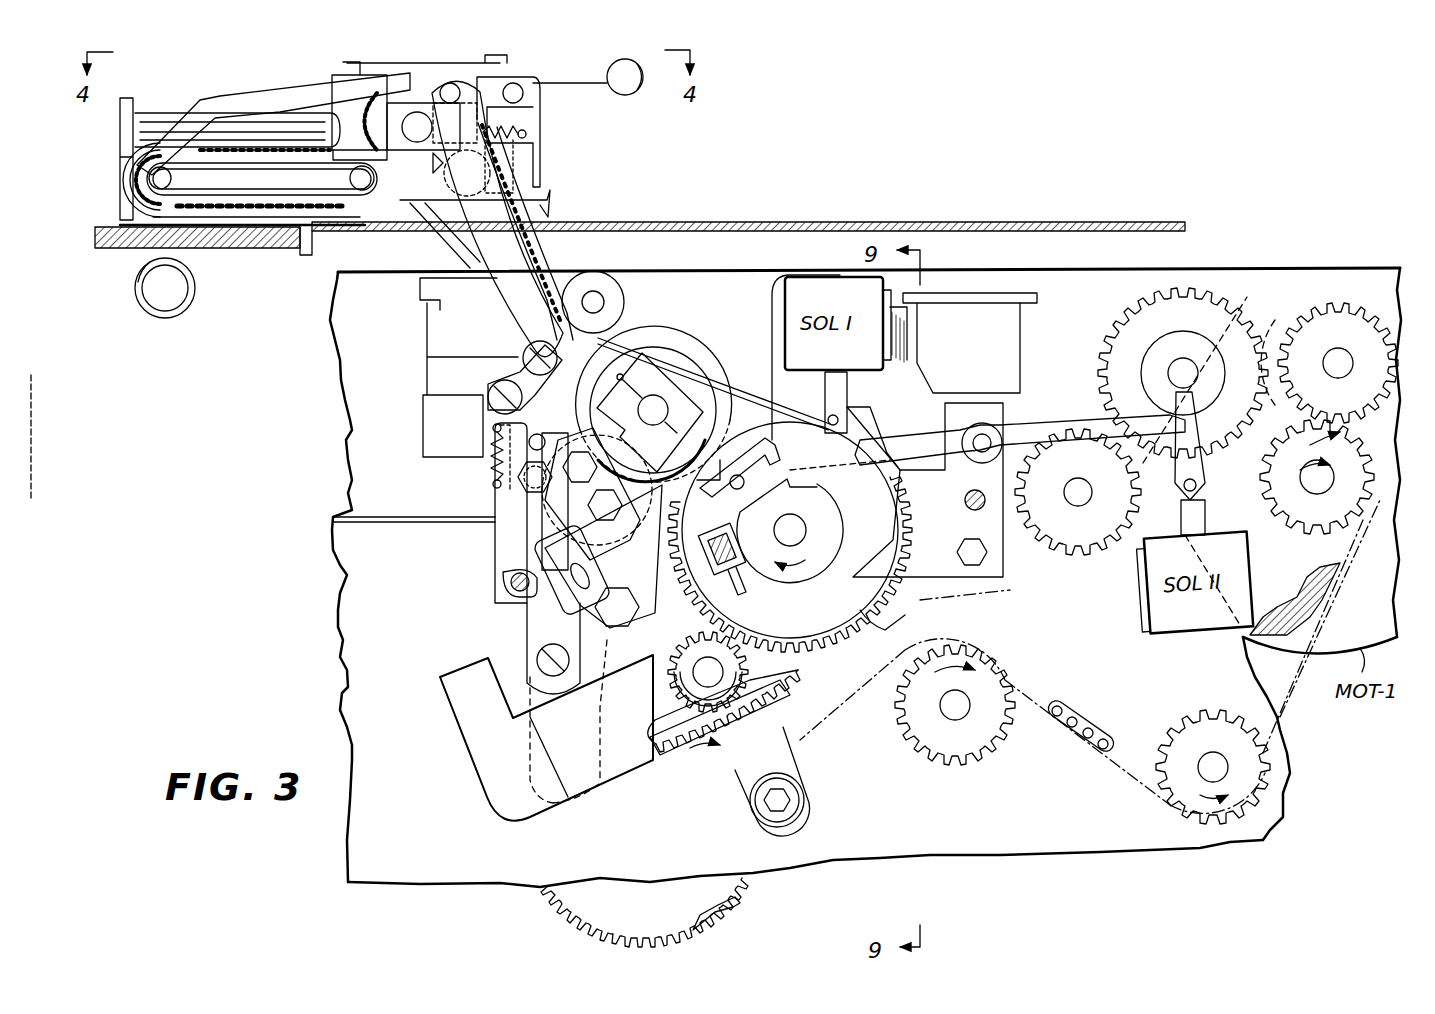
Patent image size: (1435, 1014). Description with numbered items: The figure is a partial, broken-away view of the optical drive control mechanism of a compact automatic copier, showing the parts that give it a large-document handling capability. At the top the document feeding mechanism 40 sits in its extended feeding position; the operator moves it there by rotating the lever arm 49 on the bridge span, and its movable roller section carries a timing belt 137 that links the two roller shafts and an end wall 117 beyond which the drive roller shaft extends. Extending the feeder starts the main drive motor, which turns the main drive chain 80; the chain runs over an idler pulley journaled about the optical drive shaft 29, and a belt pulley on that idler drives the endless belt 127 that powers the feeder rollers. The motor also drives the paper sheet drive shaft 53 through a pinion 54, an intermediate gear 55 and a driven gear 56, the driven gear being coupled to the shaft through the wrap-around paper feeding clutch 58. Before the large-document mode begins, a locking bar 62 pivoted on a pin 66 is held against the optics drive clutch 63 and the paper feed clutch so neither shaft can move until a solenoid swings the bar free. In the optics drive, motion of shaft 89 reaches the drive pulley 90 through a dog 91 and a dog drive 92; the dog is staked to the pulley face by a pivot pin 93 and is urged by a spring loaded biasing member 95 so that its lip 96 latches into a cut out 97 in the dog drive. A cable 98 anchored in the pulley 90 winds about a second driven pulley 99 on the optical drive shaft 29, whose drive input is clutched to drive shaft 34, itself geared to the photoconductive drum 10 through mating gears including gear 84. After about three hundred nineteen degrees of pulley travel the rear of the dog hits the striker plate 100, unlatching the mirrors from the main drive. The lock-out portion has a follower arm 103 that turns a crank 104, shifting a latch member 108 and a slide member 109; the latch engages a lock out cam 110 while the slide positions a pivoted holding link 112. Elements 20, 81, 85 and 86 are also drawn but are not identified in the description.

The photoconductive drum 10 is at (717, 280).
The platen roller 20 is at (135, 252).
The optical drive shaft 29 is at (668, 390).
The drive shaft 34 is at (690, 676).
The document feeding mechanism 40 is at (518, 70).
The lever arm 49 is at (636, 88).
The paper sheet drive shaft 53 is at (1185, 370).
The pinion 54 is at (1312, 545).
The intermediate gear 55 is at (1352, 290).
The driven gear 56 is at (1232, 315).
The paper feeding clutch 58 is at (1140, 370).
The locking bar 62 is at (898, 440).
The optics drive clutch 63 is at (1102, 432).
The pin 66 is at (980, 432).
The main drive chain 80 is at (852, 522).
The sector gear 81 is at (808, 695).
The gear 84 is at (748, 885).
The pinion 85 is at (745, 660).
The pawl 86 is at (884, 627).
The shaft 89 is at (800, 535).
The drive pulley 90 is at (890, 598).
The dog 91 is at (683, 446).
The dog drive 92 is at (840, 528).
The pivot pin 93 is at (752, 386).
The spring loaded biasing member 95 is at (742, 588).
The lip 96 is at (795, 452).
The cut out 97 is at (805, 472).
The cable 98 is at (815, 415).
The second driven pulley 99 is at (662, 340).
The striker plate 100 is at (490, 462).
The follower arm 103 is at (470, 225).
The crank 104 is at (500, 378).
The latch member 108 is at (500, 555).
The slide member 109 is at (525, 650).
The lock out cam 110 is at (545, 525).
The holding link 112 is at (575, 615).
The end wall 117 is at (122, 205).
The endless belt 127 is at (535, 240).
The timing belt 137 is at (332, 215).